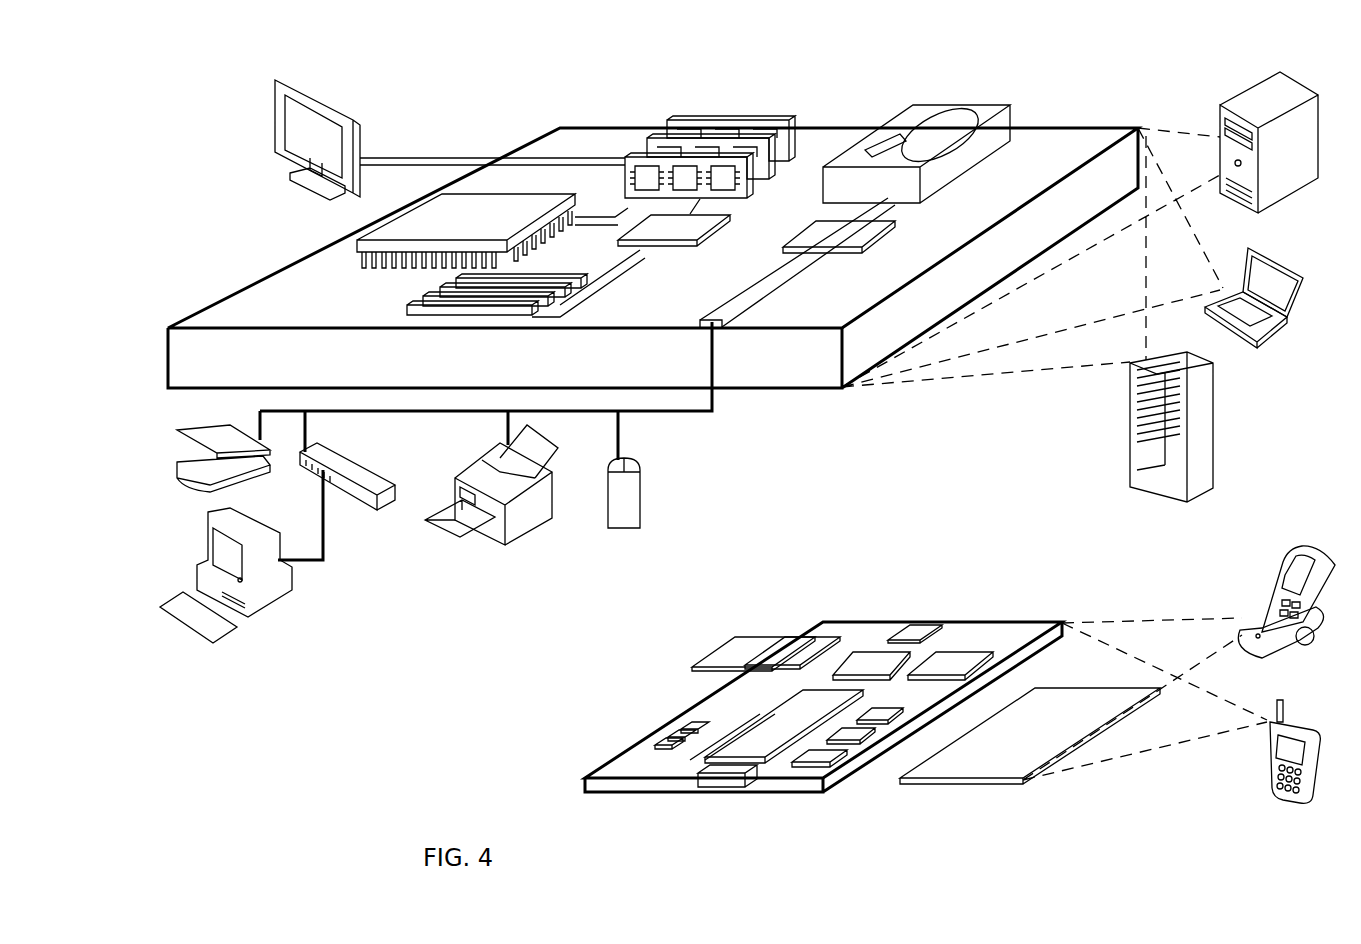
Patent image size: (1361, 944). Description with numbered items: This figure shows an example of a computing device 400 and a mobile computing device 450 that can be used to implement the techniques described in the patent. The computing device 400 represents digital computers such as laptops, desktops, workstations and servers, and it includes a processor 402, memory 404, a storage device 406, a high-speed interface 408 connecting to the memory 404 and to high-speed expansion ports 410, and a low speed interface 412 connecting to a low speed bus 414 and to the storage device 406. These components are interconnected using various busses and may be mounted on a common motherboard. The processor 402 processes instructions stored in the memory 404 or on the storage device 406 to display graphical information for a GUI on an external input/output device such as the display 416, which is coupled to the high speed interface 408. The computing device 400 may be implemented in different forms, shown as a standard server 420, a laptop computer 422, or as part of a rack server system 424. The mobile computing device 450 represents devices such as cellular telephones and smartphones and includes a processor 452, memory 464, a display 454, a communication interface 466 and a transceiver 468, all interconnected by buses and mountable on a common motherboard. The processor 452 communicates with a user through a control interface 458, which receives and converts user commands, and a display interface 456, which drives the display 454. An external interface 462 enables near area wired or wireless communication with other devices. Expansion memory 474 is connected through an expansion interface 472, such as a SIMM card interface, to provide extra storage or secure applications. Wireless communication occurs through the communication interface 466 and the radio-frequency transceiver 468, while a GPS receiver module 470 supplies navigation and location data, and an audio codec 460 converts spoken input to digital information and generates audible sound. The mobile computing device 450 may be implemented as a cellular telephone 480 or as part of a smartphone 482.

The computing device 400 is at (483, 98).
The processor 402 is at (357, 245).
The memory 404 is at (688, 122).
The storage device 406 is at (920, 110).
The high-speed interface 408 is at (650, 225).
The high-speed expansion ports 410 is at (410, 305).
The low speed interface 412 is at (835, 235).
The low speed bus 414 is at (720, 324).
The display 416 is at (278, 82).
The standard server 420 is at (1222, 112).
The laptop computer 422 is at (1250, 252).
The rack server system 424 is at (1130, 442).
The mobile computing device 450 is at (807, 596).
The processor 452 is at (760, 760).
The display 454 is at (1025, 784).
The display interface 456 is at (840, 770).
The control interface 458 is at (880, 757).
The audio codec 460 is at (886, 722).
The external interface 462 is at (725, 790).
The memory 464 is at (673, 741).
The communication interface 466 is at (873, 660).
The transceiver 468 is at (950, 662).
The GPS receiver module 470 is at (921, 636).
The expansion interface 472 is at (803, 634).
The expansion memory 474 is at (738, 632).
The cellular telephone 480 is at (1305, 565).
The smartphone 482 is at (1280, 702).